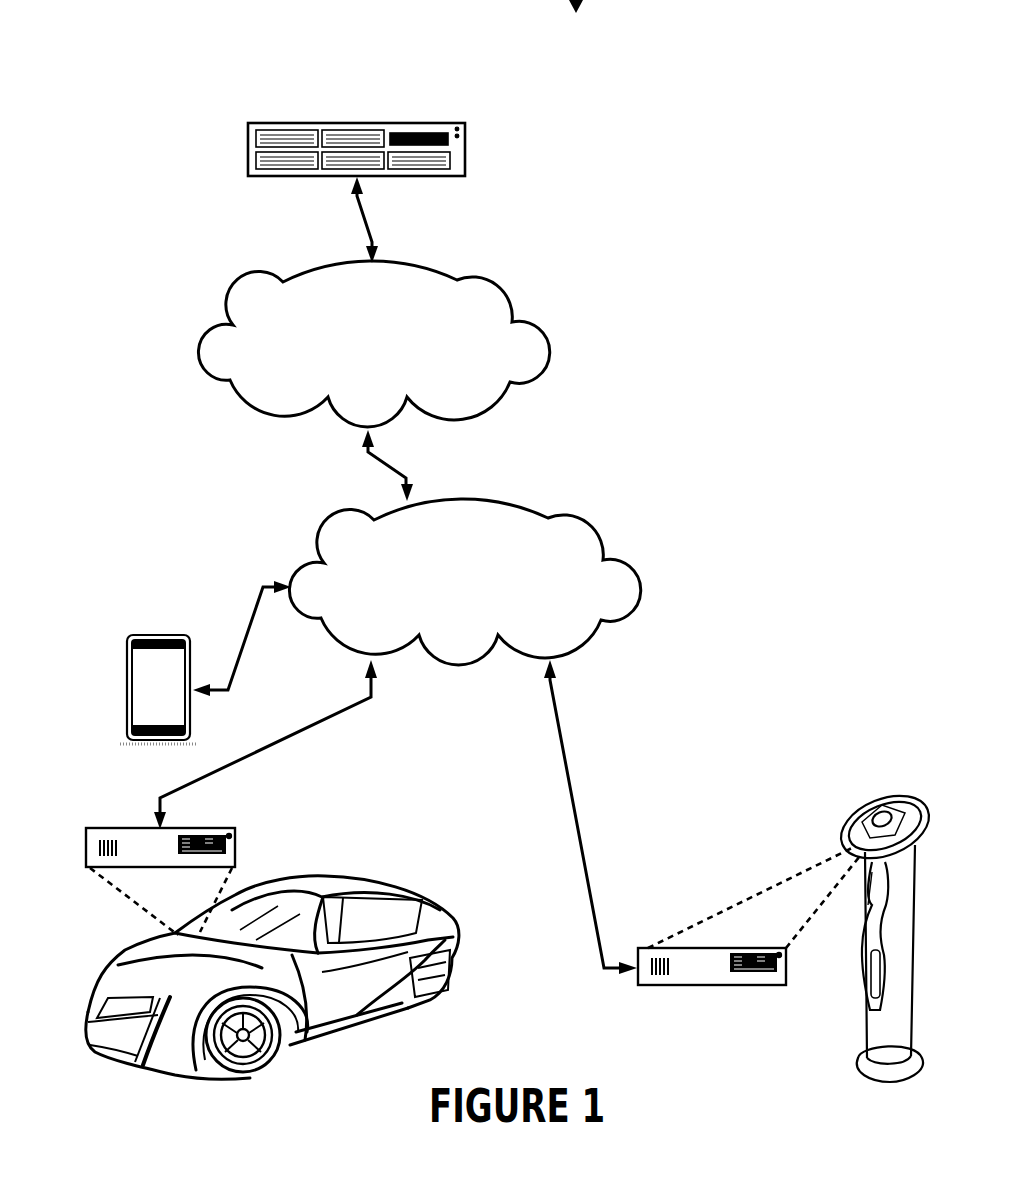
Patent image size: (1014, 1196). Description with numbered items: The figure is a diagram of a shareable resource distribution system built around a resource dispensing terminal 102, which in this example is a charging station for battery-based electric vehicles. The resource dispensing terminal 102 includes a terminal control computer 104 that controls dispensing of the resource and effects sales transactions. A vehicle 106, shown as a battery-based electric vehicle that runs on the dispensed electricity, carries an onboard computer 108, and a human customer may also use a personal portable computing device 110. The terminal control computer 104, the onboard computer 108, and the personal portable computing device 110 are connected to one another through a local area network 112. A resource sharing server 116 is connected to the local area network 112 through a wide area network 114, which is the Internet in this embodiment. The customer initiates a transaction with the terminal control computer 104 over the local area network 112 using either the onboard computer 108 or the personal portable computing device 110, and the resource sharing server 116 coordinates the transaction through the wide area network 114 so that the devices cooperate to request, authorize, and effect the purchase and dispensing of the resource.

The resource dispensing terminal 102 is at (893, 796).
The terminal control computer 104 is at (712, 988).
The vehicle 106 is at (462, 983).
The onboard computer 108 is at (86, 848).
The personal portable computing device 110 is at (127, 690).
The local area network 112 is at (464, 582).
The wide area network 114 is at (373, 344).
The resource sharing server 116 is at (356, 121).